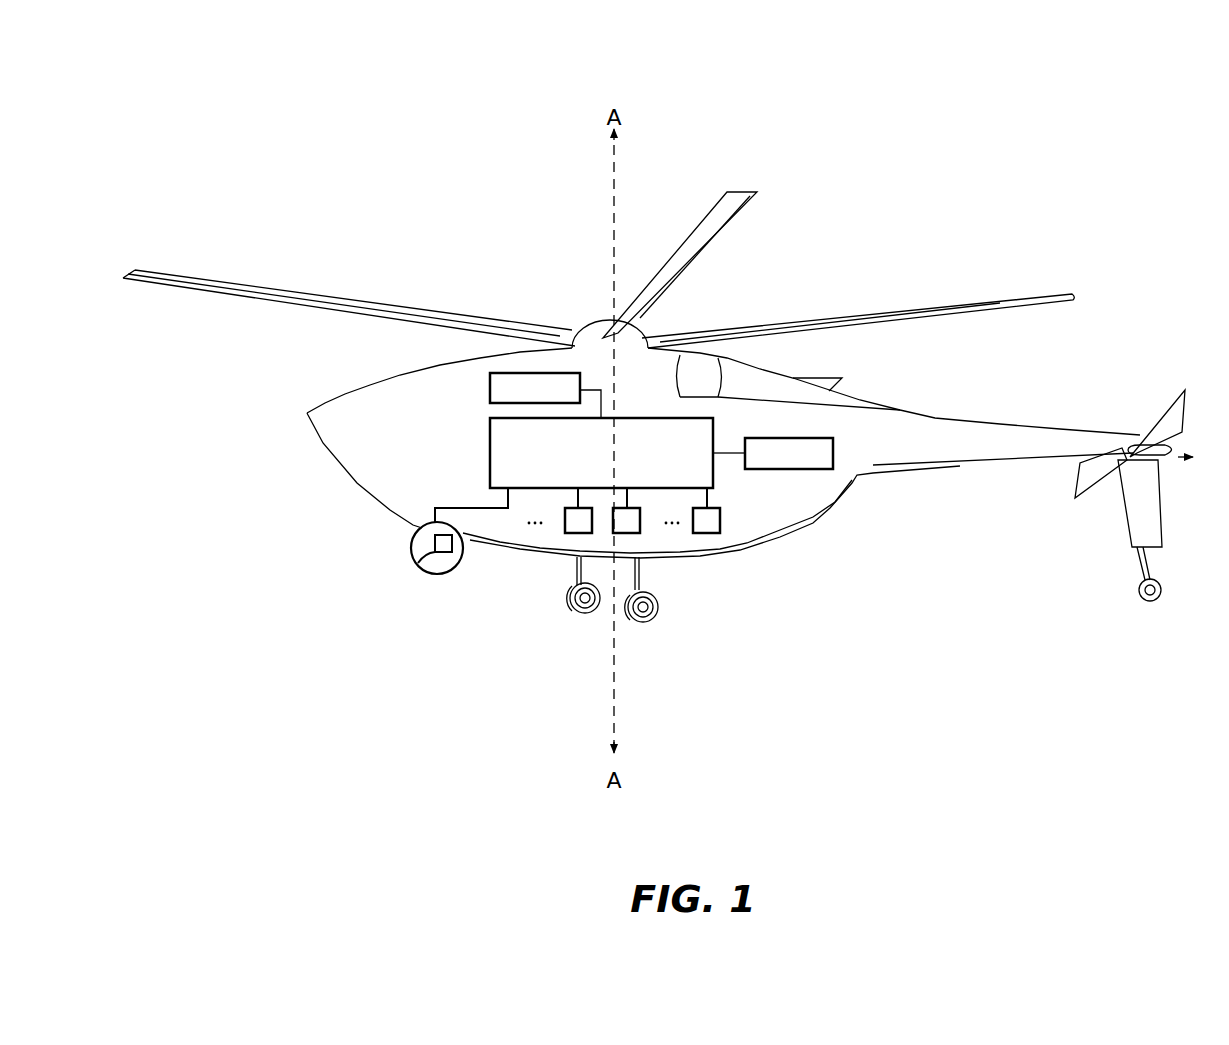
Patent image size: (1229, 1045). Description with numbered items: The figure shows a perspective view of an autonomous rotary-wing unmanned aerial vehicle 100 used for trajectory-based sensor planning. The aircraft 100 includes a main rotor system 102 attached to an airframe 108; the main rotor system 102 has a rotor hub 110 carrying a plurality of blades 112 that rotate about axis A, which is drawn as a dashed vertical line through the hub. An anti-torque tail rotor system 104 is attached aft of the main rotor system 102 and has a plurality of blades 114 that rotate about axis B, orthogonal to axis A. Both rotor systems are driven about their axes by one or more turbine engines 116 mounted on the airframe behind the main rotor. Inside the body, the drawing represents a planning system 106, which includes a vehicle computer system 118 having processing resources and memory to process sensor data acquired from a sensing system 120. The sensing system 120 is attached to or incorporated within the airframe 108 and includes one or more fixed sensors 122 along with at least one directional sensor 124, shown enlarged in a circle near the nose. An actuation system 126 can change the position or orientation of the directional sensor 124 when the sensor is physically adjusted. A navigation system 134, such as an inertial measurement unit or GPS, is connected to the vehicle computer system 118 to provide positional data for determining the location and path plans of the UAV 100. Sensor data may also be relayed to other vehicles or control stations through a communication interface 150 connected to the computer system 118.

The autonomous rotary-wing unmanned aerial vehicle 100 is at (350, 60).
The main rotor system 102 is at (532, 263).
The tail rotor system 104 is at (1139, 356).
The planning system 106 is at (478, 433).
The airframe 108 is at (893, 462).
The rotor hub 110 is at (581, 328).
The blades 112 is at (905, 310).
The blades 114 is at (1075, 498).
The turbine engines 116 is at (700, 388).
The vehicle computer system 118 is at (584, 464).
The sensing system 120 is at (466, 494).
The fixed sensors 122 is at (560, 542).
The directional sensor 124 is at (410, 542).
The actuation system 126 is at (418, 563).
The navigation system 134 is at (518, 399).
The communication interface 150 is at (772, 464).